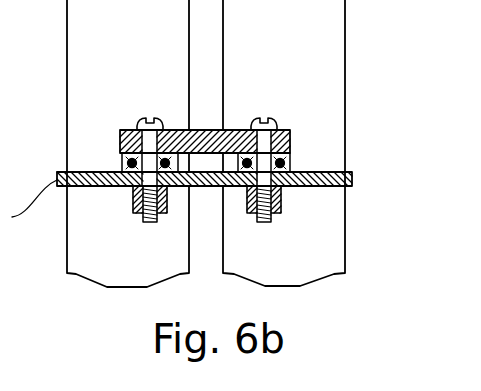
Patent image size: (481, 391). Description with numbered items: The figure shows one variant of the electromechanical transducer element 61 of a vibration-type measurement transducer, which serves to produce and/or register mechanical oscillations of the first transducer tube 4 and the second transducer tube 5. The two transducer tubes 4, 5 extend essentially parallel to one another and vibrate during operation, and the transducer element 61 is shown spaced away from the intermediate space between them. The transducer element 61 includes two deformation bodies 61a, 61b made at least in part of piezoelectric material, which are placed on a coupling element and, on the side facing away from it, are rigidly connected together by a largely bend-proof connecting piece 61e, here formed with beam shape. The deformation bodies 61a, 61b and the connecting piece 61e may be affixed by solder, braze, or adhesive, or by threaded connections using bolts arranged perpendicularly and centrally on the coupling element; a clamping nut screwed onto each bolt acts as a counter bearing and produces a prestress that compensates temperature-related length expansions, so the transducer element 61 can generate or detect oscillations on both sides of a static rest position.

The first transducer tube 4 is at (90, 32).
The second transducer tube 5 is at (333, 22).
The transducer element 61 is at (60, 157).
The deformation body 61a is at (122, 160).
The deformation body 61b is at (285, 163).
The connecting piece 61e is at (180, 128).